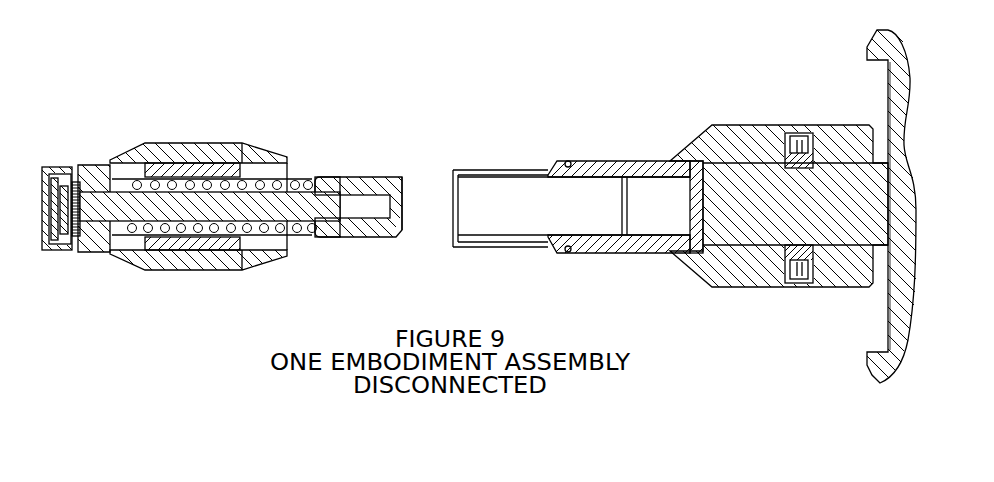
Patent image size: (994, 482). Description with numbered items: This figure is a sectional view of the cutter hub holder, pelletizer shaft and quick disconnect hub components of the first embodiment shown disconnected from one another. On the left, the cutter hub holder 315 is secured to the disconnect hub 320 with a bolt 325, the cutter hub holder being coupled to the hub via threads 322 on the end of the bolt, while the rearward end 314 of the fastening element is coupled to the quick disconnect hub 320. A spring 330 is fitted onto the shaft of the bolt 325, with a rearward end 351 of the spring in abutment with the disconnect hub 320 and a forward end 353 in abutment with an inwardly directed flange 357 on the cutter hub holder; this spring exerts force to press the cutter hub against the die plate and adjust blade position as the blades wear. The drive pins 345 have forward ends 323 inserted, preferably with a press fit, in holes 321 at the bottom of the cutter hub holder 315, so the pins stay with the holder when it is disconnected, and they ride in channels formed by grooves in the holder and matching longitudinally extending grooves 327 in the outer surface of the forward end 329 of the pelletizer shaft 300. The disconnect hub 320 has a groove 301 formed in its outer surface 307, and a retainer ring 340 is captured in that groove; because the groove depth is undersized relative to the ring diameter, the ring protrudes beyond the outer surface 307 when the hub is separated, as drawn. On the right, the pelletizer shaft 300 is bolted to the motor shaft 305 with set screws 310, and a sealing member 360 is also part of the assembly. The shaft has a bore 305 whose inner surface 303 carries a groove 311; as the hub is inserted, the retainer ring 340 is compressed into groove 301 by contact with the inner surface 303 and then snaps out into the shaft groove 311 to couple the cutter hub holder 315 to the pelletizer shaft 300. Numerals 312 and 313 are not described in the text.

The bolt 325 is at (97, 173).
The inwardly directed flange 357 is at (110, 173).
The cutter hub holder 315 is at (180, 142).
The drive pins 345 is at (201, 150).
The ball bearings 312 is at (263, 186).
The spring 330 is at (302, 170).
The groove 301 is at (335, 180).
The retainer ring 340 is at (337, 214).
The outer surface 307 is at (361, 175).
The rearward end 314 is at (382, 172).
The disconnect hub 320 is at (398, 173).
The forward end 353 is at (112, 243).
The holes 321 is at (130, 254).
The forward ends 323 is at (140, 268).
The rearward end 351 is at (310, 243).
The threads 322 is at (350, 240).
The forward end 329 is at (460, 164).
The grooves 327 is at (515, 166).
The sealing member 360 is at (568, 156).
The pelletizer shaft 300 is at (595, 159).
The groove 311 is at (628, 163).
The body flange 313 is at (653, 165).
The set screws 310 is at (803, 132).
The motor shaft 305 is at (840, 156).
The inner surface 303 is at (597, 246).